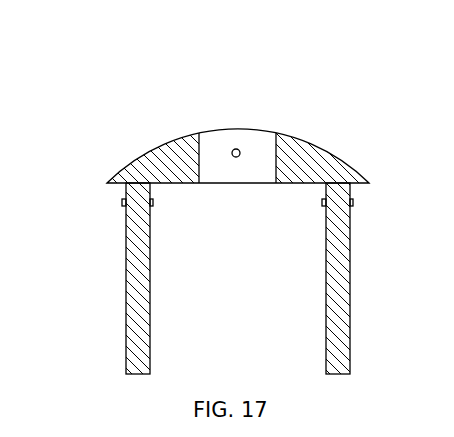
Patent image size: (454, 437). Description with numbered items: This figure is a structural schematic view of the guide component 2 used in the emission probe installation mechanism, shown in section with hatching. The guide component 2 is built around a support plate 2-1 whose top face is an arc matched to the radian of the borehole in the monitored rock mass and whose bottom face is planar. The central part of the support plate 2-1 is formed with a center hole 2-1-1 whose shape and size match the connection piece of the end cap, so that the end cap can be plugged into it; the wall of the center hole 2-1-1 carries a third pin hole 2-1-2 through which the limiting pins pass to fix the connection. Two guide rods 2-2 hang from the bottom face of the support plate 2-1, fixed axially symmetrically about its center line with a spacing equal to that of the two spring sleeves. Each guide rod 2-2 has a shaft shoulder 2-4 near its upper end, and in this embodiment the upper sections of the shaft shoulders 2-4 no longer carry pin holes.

The guide component 2 is at (231, 201).
The support plate 2-1 is at (170, 157).
The center hole 2-1-1 is at (267, 161).
The third pin hole 2-1-2 is at (237, 149).
The guide rod 2-2 is at (345, 312).
The shaft shoulder 2-4 is at (351, 201).